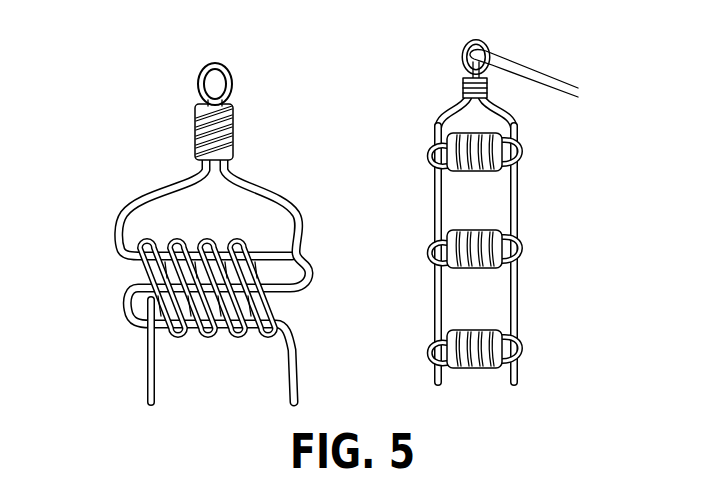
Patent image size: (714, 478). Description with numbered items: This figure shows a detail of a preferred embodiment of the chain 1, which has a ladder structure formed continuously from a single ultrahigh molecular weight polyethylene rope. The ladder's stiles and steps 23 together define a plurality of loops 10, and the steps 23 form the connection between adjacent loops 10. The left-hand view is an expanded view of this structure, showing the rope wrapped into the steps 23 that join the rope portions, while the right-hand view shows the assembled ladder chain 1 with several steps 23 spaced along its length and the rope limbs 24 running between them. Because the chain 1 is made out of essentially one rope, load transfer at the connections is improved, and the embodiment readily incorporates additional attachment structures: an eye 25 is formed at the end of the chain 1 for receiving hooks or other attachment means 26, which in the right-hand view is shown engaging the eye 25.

The chain 1 is at (104, 156).
The loop 10 is at (460, 203).
The step 23 is at (115, 281).
The suture limbs 24 is at (150, 387).
The eye 25 is at (214, 84).
The attachment means 26 is at (542, 72).